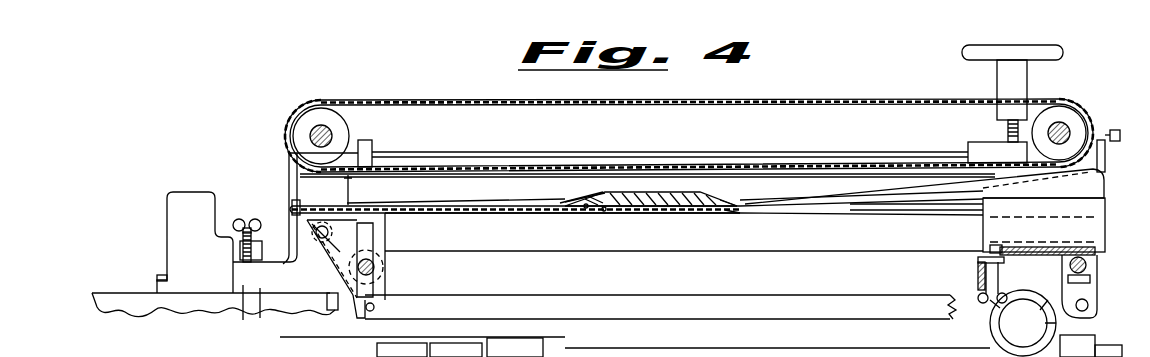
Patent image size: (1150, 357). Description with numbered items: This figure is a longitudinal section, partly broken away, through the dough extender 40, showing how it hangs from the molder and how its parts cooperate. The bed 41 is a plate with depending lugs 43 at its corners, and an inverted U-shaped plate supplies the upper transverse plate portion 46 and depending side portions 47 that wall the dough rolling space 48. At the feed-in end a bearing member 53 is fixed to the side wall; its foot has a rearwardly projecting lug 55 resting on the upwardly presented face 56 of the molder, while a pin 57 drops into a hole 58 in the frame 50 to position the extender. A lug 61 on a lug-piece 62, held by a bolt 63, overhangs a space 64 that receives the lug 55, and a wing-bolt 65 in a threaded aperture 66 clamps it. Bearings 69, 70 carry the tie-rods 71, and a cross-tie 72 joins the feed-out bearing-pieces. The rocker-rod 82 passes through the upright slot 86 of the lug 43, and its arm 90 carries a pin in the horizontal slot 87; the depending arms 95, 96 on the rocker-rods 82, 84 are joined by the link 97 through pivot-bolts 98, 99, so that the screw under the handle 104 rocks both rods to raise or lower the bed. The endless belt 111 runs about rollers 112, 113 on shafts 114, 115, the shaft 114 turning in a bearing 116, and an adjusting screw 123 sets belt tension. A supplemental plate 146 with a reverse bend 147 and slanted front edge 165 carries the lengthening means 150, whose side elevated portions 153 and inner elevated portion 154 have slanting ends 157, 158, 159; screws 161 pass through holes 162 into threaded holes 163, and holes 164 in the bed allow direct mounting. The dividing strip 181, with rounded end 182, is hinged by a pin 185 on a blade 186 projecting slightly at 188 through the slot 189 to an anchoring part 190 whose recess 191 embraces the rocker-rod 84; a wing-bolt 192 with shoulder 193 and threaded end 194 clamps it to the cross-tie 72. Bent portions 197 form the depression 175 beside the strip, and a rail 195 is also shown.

The dough extender 40 is at (769, 91).
The bed 41 is at (503, 216).
The depending lug 43 is at (393, 224).
The upper transverse plate portion 46 is at (570, 147).
The depending side portion 47 is at (671, 255).
The dough rolling space 48 is at (470, 170).
The frame 50 is at (180, 310).
The bearing member 53 is at (349, 183).
The lug 55 is at (454, 334).
The upwardly presented face 56 is at (266, 311).
The pin 57 is at (325, 298).
The hole 58 is at (332, 318).
The lug 61 is at (236, 244).
The lug-piece 62 is at (167, 243).
The bolt 63 is at (157, 275).
The space 64 is at (262, 262).
The wing-bolt 65 is at (247, 218).
The threaded aperture 66 is at (238, 258).
The bearing 69 is at (378, 147).
The bearing 70 is at (978, 141).
The tie-rod 71 is at (676, 148).
The cross-tie 72 is at (965, 258).
The rocker-rod 82 is at (375, 268).
The rocker-rod 84 is at (1068, 268).
The upright slot 86 is at (376, 236).
The horizontal slot 87 is at (329, 259).
The arm 90 is at (385, 231).
The depending arm 95 is at (376, 290).
The depending arm 96 is at (1075, 300).
The link 97 is at (586, 298).
The pivot-bolt 98 is at (376, 307).
The pivot-bolt 99 is at (1089, 305).
The handle 104 is at (982, 44).
The endless belt 111 is at (699, 101).
The roller 112 is at (357, 118).
The roller 113 is at (1094, 101).
The shaft 114 is at (322, 128).
The shaft 115 is at (1055, 124).
The bearing 116 is at (540, 343).
The adjusting screw 123 is at (1116, 142).
The supplemental plate 146 is at (472, 214).
The reverse bend 147 is at (290, 206).
The lengthening means 150 is at (582, 196).
The elevated portion 153 is at (398, 199).
The elevated portion 154 is at (645, 195).
The slanting feed-in end 157 is at (340, 205).
The slanting feed-in end 158 is at (560, 199).
The slanting feed-out end 159 is at (726, 198).
The screw 161 is at (585, 209).
The hole 162 is at (605, 212).
The threaded hole 163 is at (607, 196).
The hole 164 is at (603, 207).
The front edge 165 is at (727, 213).
The depression 175 is at (845, 213).
The strip 181 is at (832, 193).
The rounded inner end 182 is at (740, 200).
The pin 185 is at (1103, 186).
The blade 186 is at (983, 231).
The blade projection 188 is at (1100, 131).
The slot 189 is at (886, 212).
The anchoring part 190 is at (1086, 253).
The recess 191 is at (1092, 280).
The wing-bolt 192 is at (980, 296).
The shoulder 193 is at (978, 270).
The threaded end 194 is at (996, 247).
The rail 195 is at (875, 160).
The bent portion 197 is at (858, 214).